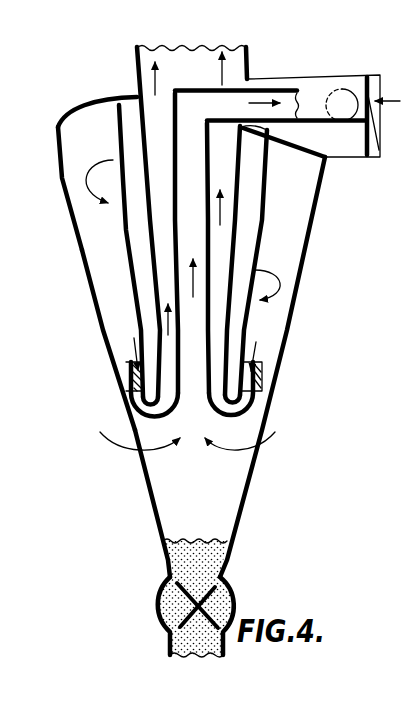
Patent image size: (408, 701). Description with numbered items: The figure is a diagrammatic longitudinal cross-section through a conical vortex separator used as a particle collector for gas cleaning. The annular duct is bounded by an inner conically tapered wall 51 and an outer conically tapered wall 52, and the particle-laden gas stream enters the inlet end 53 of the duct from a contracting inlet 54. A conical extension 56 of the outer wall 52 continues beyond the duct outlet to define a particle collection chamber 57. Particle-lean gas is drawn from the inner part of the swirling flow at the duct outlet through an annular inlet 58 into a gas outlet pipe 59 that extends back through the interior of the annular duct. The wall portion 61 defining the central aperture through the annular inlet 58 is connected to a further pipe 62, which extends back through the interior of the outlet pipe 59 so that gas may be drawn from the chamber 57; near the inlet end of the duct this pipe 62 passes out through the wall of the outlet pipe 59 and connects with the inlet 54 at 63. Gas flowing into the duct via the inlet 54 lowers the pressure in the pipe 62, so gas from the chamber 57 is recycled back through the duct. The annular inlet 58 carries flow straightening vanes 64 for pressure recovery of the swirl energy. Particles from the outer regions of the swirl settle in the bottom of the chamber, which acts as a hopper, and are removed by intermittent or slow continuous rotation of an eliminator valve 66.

The inner conically tapered wall 51 is at (128, 246).
The outer conically tapered wall 52 is at (97, 310).
The inlet end 53 is at (82, 126).
The contracting inlet 54 is at (298, 78).
The conical extension 56 is at (243, 496).
The particle collection chamber 57 is at (207, 501).
The annular inlet 58 is at (235, 411).
The gas outlet pipe 59 is at (136, 58).
The wall portion 61 is at (150, 409).
The further pipe 62 is at (228, 327).
The connection point 63 is at (333, 97).
The flow straightening vanes 64 is at (242, 390).
The eliminator valve 66 is at (205, 602).